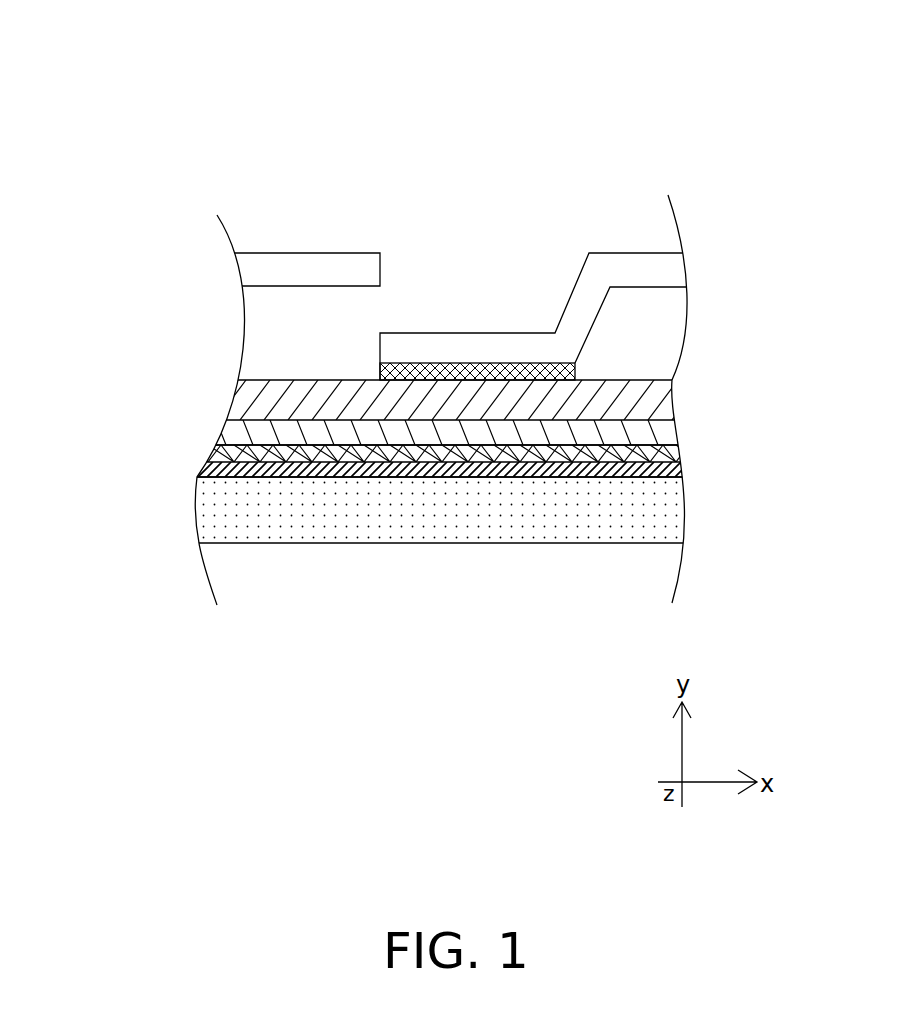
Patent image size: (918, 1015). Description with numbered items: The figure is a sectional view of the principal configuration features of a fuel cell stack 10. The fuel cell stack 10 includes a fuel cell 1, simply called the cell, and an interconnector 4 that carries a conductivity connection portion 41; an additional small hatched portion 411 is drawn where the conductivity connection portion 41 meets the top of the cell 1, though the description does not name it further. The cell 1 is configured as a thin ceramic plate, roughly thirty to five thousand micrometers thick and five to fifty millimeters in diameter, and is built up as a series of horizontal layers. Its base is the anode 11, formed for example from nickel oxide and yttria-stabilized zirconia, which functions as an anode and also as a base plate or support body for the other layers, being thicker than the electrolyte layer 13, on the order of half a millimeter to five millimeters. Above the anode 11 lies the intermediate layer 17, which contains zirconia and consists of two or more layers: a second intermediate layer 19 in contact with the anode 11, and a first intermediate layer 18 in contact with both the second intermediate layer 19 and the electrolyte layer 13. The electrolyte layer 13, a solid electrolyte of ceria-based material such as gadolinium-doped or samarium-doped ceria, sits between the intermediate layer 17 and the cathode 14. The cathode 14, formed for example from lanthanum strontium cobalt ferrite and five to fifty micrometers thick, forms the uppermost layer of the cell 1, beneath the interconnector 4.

The fuel cell stack 10 is at (212, 104).
The fuel cell 1 is at (797, 391).
The interconnector 4 is at (300, 253).
The conductivity connection portion 41 is at (465, 333).
The conductive adhesive layer 411 is at (575, 366).
The cathode 14 is at (228, 400).
The electrolyte layer 13 is at (662, 432).
The intermediate layer 17 is at (97, 410).
The first intermediate layer 18 is at (203, 455).
The second intermediate layer 19 is at (200, 466).
The anode 11 is at (660, 520).